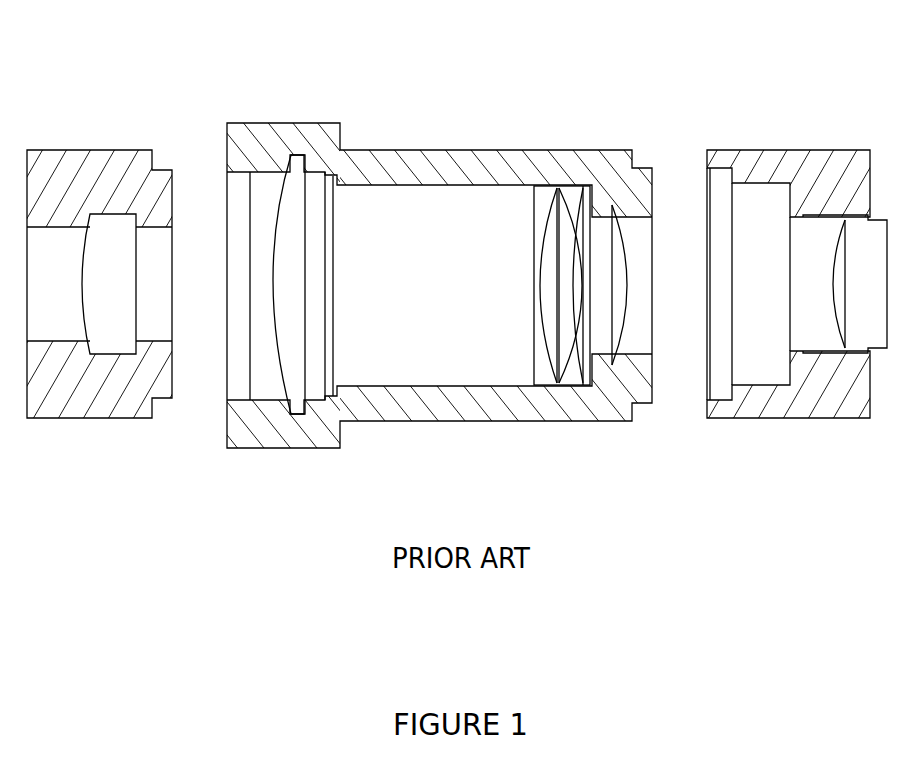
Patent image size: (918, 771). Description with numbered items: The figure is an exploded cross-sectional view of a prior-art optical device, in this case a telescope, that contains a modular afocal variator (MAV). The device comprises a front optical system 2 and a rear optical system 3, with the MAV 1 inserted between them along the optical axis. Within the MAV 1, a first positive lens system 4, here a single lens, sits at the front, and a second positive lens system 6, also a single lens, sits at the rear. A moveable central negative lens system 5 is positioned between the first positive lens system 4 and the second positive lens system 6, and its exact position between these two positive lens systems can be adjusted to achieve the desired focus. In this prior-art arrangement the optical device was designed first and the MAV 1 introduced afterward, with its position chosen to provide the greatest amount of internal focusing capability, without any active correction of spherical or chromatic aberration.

The modular afocal variator 1 is at (227, 113).
The front optical system 2 is at (78, 165).
The rear optical system 3 is at (805, 167).
The first positive lens system 4 is at (294, 323).
The moveable central negative lens system 5 is at (525, 435).
The second positive lens system 6 is at (617, 310).